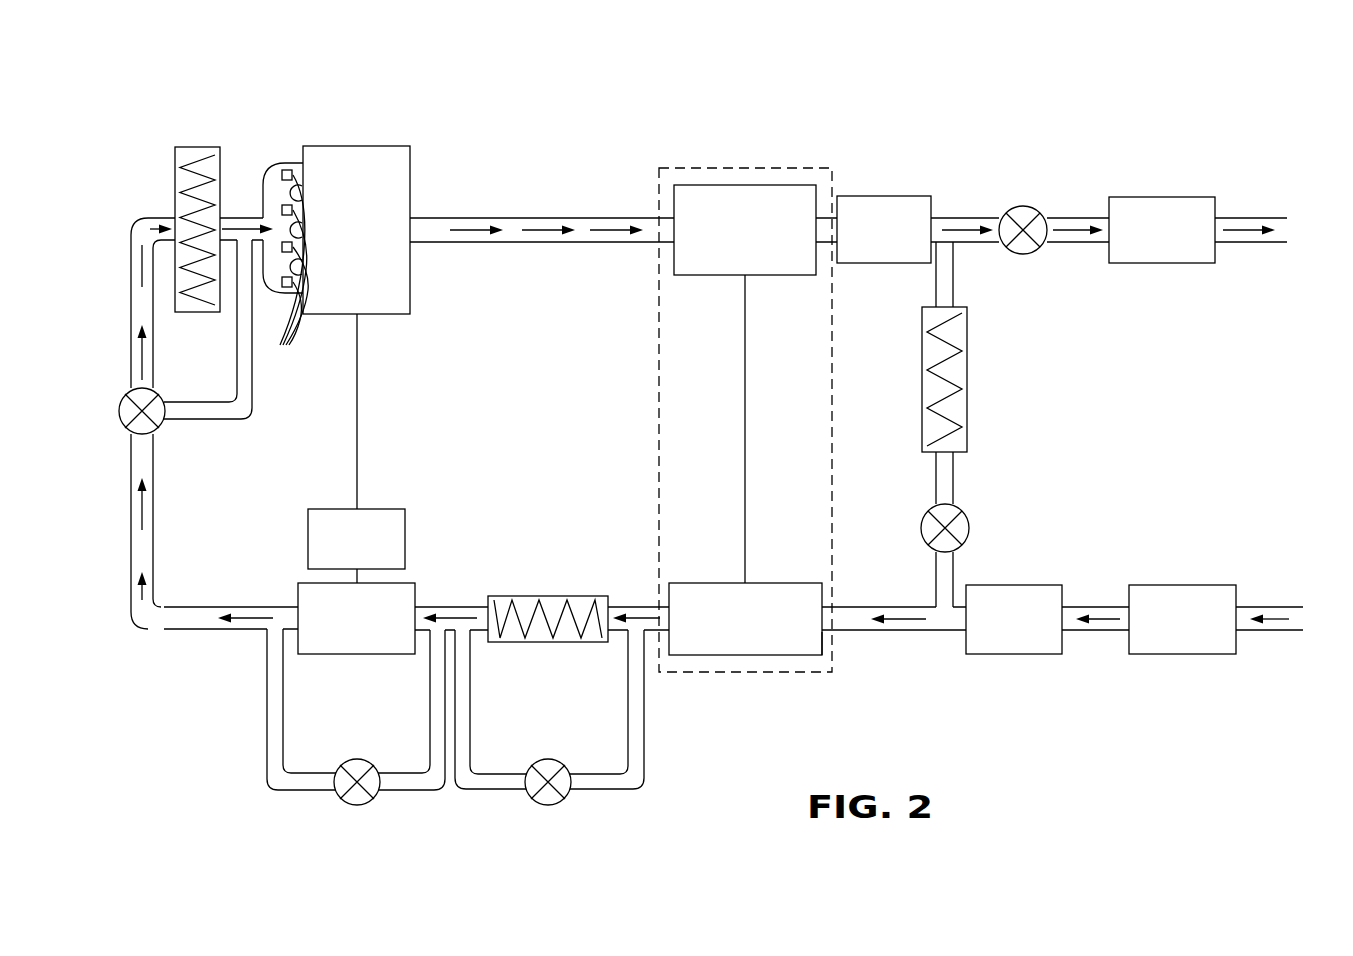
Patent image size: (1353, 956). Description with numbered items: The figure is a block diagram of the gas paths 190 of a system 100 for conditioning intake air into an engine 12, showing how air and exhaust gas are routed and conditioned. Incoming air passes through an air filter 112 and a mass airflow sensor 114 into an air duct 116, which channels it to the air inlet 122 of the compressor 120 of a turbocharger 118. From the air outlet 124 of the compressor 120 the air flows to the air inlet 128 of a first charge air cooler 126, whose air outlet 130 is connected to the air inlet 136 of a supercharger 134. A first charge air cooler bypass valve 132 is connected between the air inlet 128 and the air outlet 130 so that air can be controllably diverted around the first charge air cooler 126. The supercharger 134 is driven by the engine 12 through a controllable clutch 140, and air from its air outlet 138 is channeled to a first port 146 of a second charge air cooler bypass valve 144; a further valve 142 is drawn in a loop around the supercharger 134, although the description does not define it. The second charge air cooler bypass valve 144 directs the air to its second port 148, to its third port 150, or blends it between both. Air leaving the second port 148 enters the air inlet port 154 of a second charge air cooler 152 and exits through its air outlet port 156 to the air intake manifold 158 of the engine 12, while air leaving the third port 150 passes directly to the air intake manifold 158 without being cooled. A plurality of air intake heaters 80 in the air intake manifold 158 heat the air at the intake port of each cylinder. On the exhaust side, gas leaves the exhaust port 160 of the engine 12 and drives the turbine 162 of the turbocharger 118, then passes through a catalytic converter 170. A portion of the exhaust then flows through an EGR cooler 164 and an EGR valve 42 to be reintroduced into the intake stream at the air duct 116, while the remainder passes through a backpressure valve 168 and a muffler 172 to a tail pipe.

The engine 12 is at (362, 146).
The EGR valve 42 is at (922, 535).
The air intake heaters 80 is at (290, 271).
The system 100 is at (600, 102).
The air filter 112 is at (1208, 654).
The mass airflow sensor 114 is at (1040, 654).
The air duct 116 is at (946, 630).
The turbocharger 118 is at (832, 188).
The compressor 120 is at (757, 655).
The air inlet 122 is at (822, 632).
The air outlet 124 is at (666, 607).
The first charge air cooler 126 is at (530, 596).
The air inlet 128 is at (620, 606).
The air outlet 130 is at (479, 597).
The first charge air cooler bypass valve 132 is at (553, 804).
The supercharger 134 is at (350, 655).
The air inlet 136 is at (421, 606).
The air outlet 138 is at (298, 607).
The controllable clutch 140 is at (388, 509).
The supercharger bypass valve 142 is at (357, 805).
The second charge air cooler bypass valve 144 is at (121, 398).
The first port 146 is at (129, 436).
The second port 148 is at (157, 389).
The third port 150 is at (163, 421).
The second charge air cooler 152 is at (175, 165).
The air inlet port 154 is at (174, 218).
The air outlet port 156 is at (222, 217).
The air intake manifold 158 is at (293, 165).
The exhaust port 160 is at (411, 218).
The turbine 162 is at (712, 185).
The EGR cooler 164 is at (967, 399).
The backpressure valve 168 is at (1038, 252).
The catalytic converter 170 is at (922, 196).
The muffler 172 is at (1182, 263).
The gas paths 190 is at (637, 150).